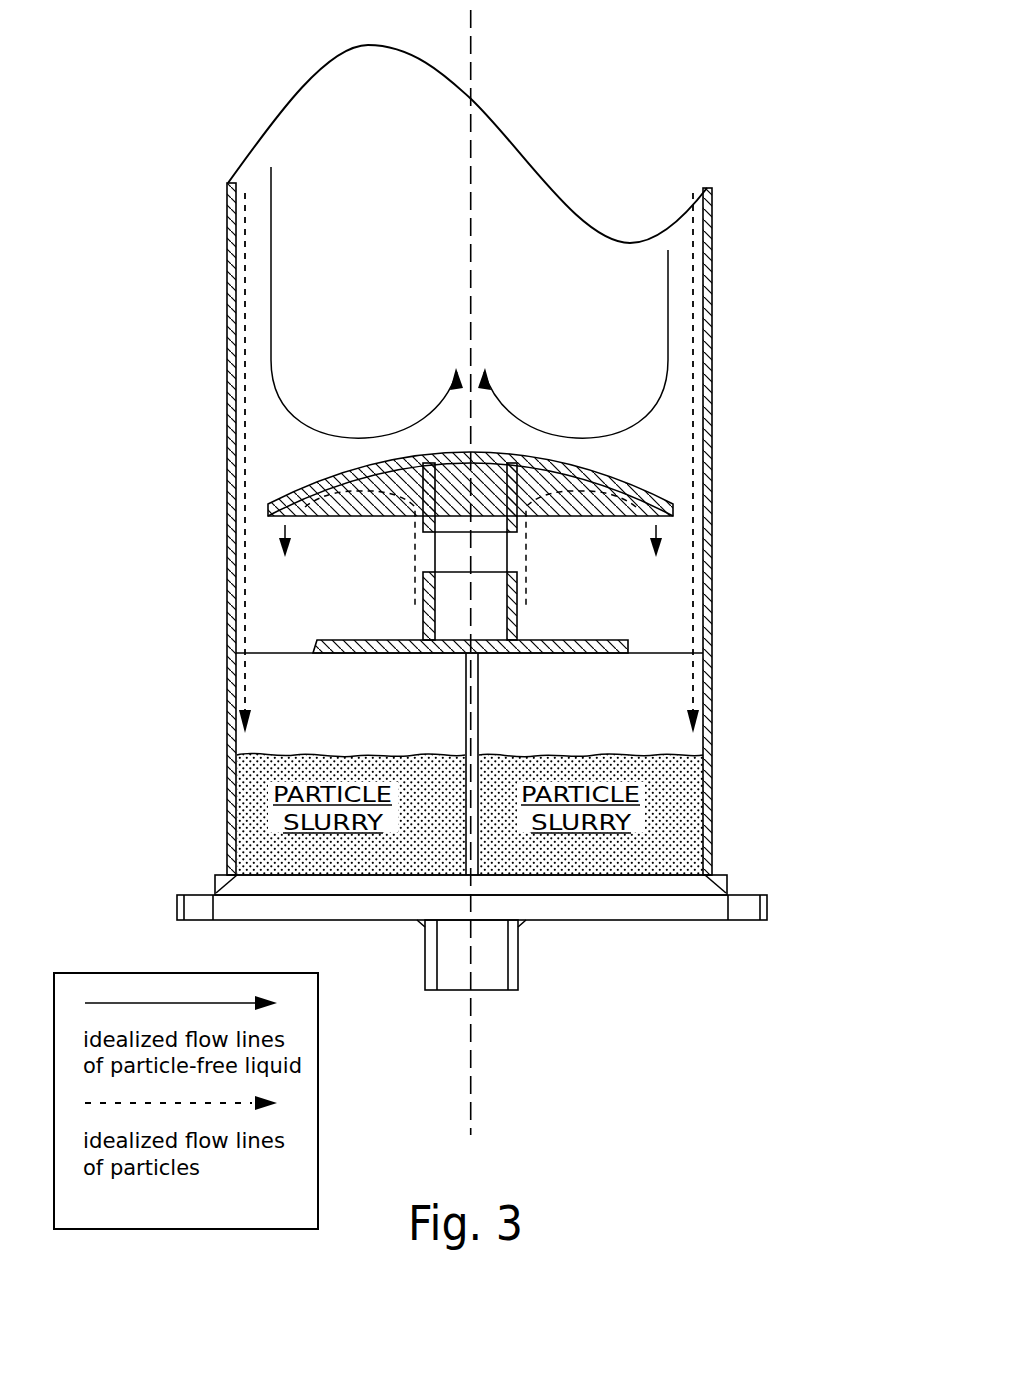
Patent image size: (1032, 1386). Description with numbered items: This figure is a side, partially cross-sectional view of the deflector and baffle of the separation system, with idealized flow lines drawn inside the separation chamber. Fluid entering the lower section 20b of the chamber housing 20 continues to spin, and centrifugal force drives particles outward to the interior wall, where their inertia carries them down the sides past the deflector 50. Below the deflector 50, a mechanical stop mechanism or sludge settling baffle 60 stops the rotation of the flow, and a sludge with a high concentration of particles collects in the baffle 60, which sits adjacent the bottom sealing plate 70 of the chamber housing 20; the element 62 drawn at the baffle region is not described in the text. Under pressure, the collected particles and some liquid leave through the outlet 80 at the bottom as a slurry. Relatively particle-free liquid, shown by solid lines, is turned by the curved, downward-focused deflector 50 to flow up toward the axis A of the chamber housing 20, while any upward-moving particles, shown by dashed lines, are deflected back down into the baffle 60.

The axis A is at (480, 53).
The chamber housing 20 is at (222, 272).
The lower section 20b is at (313, 187).
The deflector 50 is at (673, 496).
The baffle 60 is at (667, 640).
The passage 62 is at (460, 682).
The bottom sealing plate 70 is at (775, 903).
The outlet 80 is at (530, 993).